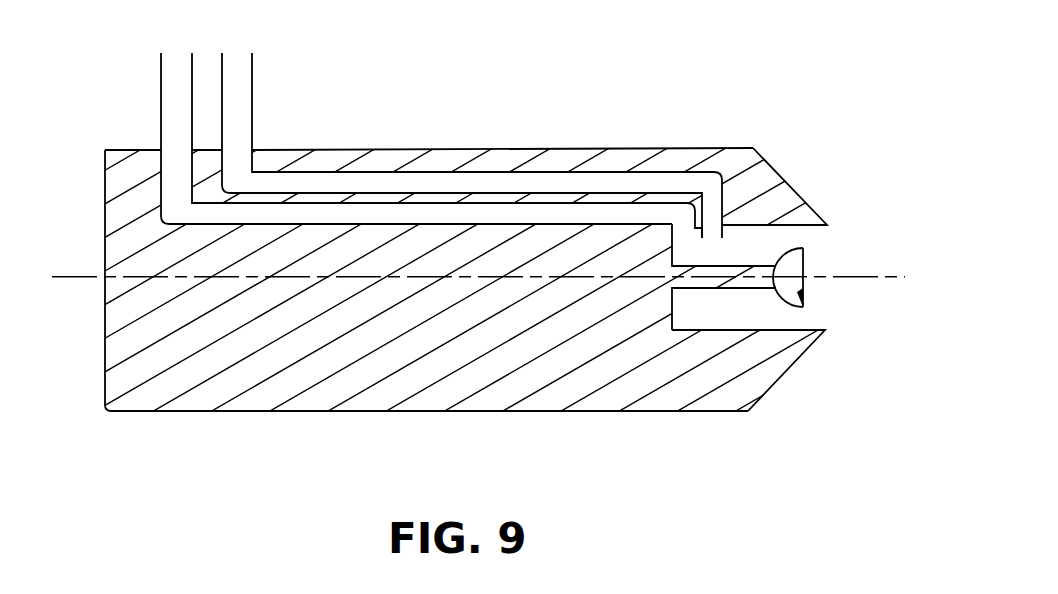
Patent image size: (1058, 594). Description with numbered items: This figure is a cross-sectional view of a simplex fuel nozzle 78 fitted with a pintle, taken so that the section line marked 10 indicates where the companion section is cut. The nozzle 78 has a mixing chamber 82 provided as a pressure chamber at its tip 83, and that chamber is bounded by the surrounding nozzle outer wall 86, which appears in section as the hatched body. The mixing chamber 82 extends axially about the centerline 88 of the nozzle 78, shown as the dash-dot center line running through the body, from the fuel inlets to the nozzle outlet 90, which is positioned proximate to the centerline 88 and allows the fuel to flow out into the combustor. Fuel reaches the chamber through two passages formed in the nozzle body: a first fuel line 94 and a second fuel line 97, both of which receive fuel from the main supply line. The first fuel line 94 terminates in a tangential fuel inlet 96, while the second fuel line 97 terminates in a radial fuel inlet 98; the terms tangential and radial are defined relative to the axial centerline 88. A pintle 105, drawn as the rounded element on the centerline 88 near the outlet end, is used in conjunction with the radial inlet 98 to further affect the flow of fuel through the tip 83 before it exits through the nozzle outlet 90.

The section line 10- 10 is at (711, 448).
The nozzle 78 is at (500, 98).
The mixing chamber 82 is at (755, 316).
The tip 83 is at (748, 122).
The nozzle outer wall 86 is at (482, 412).
The centerline 88 is at (93, 277).
The nozzle outlet 90 is at (817, 243).
The first fuel line 94 is at (253, 92).
The tangential fuel inlet 96 is at (735, 225).
The second fuel line 97 is at (158, 112).
The radial fuel inlet 98 is at (682, 226).
The pintle 105 is at (795, 292).